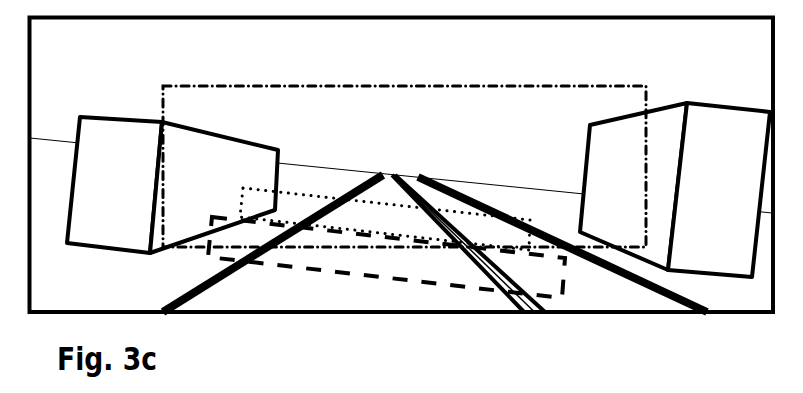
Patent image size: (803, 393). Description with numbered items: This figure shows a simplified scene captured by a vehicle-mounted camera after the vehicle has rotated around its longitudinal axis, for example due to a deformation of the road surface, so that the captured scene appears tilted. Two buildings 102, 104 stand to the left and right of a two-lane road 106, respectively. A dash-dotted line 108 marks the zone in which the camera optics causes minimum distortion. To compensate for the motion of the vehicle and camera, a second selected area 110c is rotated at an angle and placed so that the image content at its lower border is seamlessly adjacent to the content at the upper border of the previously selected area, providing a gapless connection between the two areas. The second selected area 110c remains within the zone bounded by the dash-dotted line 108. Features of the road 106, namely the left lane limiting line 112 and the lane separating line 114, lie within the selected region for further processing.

The building 102 is at (172, 185).
The building 104 is at (675, 190).
The two-lane road 106 is at (435, 243).
The dash-dotted line 108 is at (347, 84).
The second selected area 110c is at (385, 219).
The left lane limiting line 112 is at (218, 288).
The lane separating line 114 is at (513, 303).